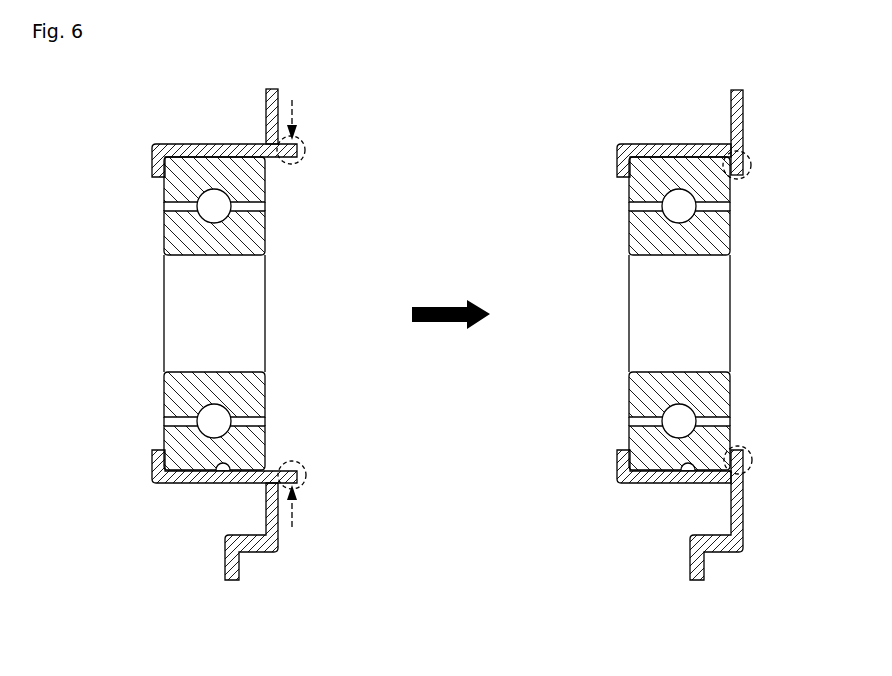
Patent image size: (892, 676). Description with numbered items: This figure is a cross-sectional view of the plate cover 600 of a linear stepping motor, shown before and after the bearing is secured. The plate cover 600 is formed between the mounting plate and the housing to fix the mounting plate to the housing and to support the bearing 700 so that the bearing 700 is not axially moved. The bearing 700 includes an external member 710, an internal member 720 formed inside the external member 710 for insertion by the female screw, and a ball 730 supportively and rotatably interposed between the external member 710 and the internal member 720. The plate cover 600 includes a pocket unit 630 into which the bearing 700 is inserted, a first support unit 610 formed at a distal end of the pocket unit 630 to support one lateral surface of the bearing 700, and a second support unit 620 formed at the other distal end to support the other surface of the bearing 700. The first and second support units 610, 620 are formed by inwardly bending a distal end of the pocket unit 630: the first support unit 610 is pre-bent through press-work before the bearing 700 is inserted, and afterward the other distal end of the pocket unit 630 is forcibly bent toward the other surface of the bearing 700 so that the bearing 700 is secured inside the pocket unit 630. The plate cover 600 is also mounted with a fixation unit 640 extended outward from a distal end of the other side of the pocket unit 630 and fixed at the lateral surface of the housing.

The plate cover 600 is at (201, 132).
The first support unit 610 is at (157, 166).
The second support unit 620 is at (298, 162).
The pocket unit 630 is at (216, 466).
The fixation unit 640 is at (272, 102).
The bearing 700 is at (376, 416).
The external member 710 is at (182, 454).
The internal member 720 is at (204, 388).
The ball 730 is at (212, 422).